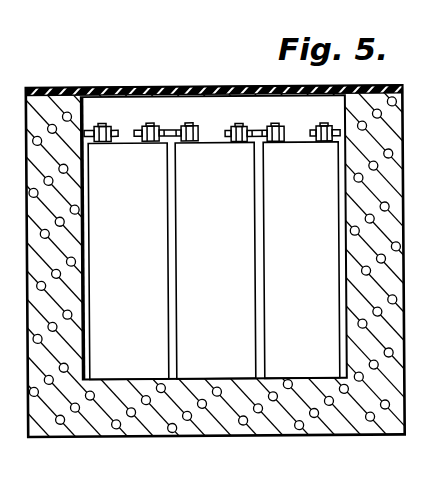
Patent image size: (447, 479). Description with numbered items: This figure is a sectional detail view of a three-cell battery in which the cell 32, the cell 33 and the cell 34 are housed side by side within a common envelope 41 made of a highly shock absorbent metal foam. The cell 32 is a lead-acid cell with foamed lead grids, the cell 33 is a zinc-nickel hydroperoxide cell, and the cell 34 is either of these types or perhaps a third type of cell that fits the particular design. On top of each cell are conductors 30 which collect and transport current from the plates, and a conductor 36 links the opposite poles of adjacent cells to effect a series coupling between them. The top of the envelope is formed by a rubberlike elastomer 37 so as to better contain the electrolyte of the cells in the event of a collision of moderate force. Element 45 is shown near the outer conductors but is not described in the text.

The conductors 30 is at (104, 124).
The lead-acid cell 32 is at (306, 364).
The zinc-nickel hydroperoxide cell 33 is at (220, 368).
The cell 34 is at (145, 372).
The conductor 36 is at (152, 125).
The rubberlike elastomer 37 is at (96, 90).
The common envelope 41 is at (60, 430).
The terminal connector 45 is at (120, 135).